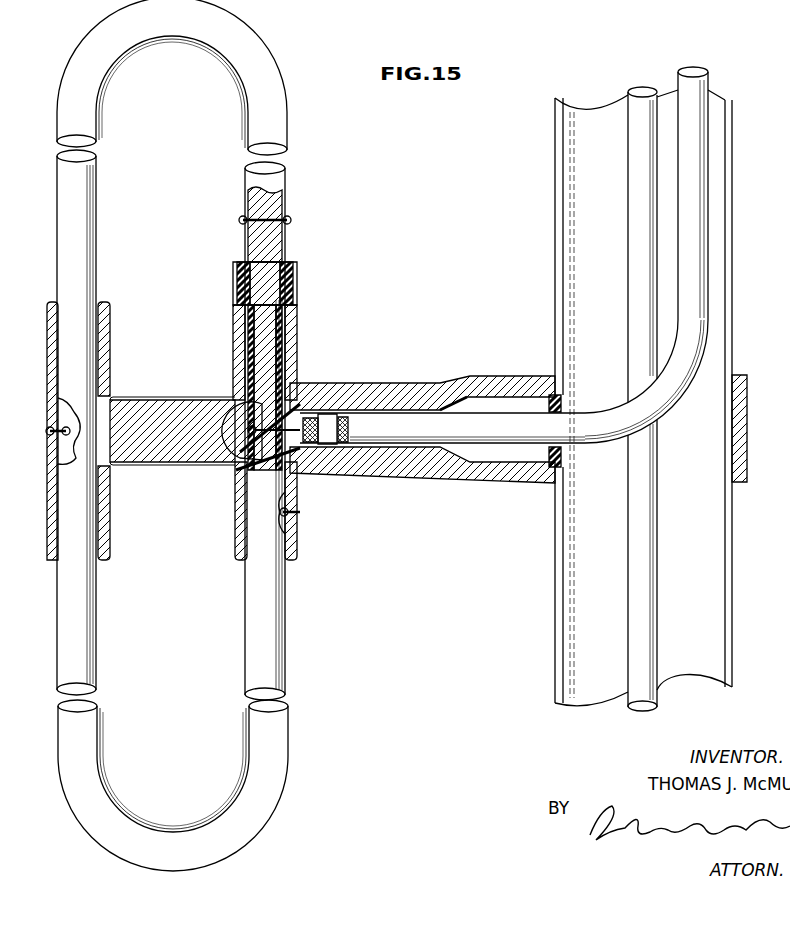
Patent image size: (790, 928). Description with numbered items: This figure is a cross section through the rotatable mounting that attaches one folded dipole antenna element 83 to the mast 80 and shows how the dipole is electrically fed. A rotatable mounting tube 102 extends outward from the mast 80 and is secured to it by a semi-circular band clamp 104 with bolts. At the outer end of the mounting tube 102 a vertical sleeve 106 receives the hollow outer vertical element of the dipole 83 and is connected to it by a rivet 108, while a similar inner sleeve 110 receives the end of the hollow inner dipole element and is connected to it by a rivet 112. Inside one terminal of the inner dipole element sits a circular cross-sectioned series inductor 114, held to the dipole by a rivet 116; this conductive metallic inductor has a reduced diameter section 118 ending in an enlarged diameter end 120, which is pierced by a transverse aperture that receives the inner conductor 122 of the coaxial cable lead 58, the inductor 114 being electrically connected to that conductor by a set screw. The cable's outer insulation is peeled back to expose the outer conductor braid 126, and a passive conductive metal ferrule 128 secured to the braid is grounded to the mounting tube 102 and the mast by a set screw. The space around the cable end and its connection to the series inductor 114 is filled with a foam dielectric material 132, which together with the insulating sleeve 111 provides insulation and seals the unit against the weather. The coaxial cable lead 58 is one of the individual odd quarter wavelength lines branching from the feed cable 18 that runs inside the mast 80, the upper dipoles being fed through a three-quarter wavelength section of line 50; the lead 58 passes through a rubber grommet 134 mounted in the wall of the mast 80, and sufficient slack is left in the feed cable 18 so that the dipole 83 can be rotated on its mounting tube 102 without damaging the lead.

The feed cable 18 is at (704, 376).
The three-quarter wavelength section of line 50 is at (634, 138).
The coaxial cable lead 58 is at (535, 430).
The mast 80 is at (732, 146).
The folded dipole antenna element 83 is at (60, 182).
The rotatable mounting tube 102 is at (452, 394).
The semi-circular band clamp 104 is at (740, 442).
The vertical sleeve 106 is at (50, 346).
The rivet 108 is at (46, 431).
The inner sleeve 110 is at (238, 328).
The insulating sleeve 111 is at (234, 285).
The rivet 112 is at (296, 514).
The series inductor 114 is at (284, 238).
The rivet 116 is at (290, 220).
The reduced diameter section 118 is at (262, 376).
The enlarged diameter end 120 is at (290, 404).
The inner conductor 122 is at (246, 458).
The outer conductor braid 126 is at (342, 446).
The passive conductive metal ferrule 128 is at (332, 424).
The foam dielectric material 132 is at (268, 464).
The grommet 134 is at (552, 470).